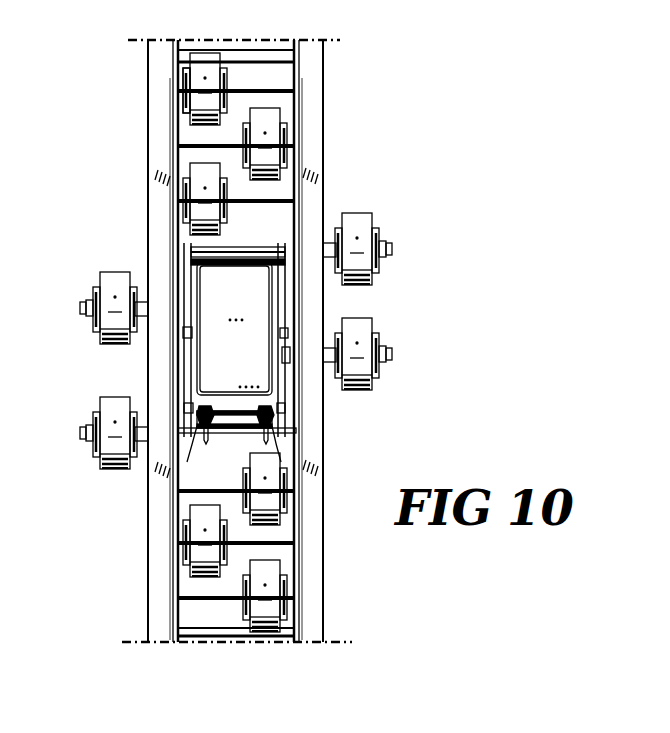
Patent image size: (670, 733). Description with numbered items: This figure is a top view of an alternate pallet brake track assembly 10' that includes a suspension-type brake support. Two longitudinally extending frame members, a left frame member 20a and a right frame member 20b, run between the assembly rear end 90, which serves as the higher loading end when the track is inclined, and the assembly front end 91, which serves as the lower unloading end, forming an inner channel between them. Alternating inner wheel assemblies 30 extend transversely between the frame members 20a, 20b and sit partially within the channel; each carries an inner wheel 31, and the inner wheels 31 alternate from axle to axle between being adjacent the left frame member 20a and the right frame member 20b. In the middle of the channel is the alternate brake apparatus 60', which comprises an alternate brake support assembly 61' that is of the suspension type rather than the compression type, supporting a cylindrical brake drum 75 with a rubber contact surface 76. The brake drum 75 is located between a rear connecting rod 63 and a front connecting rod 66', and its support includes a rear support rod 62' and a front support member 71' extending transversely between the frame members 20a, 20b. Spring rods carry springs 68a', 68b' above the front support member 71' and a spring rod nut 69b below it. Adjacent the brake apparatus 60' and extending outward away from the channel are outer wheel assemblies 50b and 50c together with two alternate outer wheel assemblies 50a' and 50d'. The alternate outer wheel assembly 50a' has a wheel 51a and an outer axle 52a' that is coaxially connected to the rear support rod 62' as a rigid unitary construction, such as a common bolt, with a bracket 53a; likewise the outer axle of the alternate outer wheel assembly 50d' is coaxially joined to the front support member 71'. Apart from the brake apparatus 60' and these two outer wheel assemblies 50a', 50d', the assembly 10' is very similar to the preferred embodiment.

The pallet brake track assembly 10' is at (182, 324).
The assembly rear end 90 is at (165, 27).
The assembly front end 91 is at (170, 646).
The spring rod nut 69b is at (422, 14).
The alternating inner wheel assembly 30 is at (224, 82).
The inner wheel 31 is at (185, 118).
The left frame member 20a is at (160, 140).
The right frame member 20b is at (313, 100).
The rear support rod 62' is at (276, 292).
The rear connecting rod 63 is at (262, 252).
The roller body 51a is at (362, 222).
The alternate outer wheel assembly 50a' is at (399, 250).
The outer axle 52a' is at (427, 244).
The roller bracket 53a is at (330, 262).
The outer wheel assembly 50c is at (383, 338).
The outer wheel assembly 50b is at (93, 294).
The alternate outer wheel assembly 50d' is at (96, 425).
The alternate brake apparatus 60' is at (238, 345).
The brake drum 75 is at (215, 348).
The rubber contact surface 76 is at (235, 372).
The alternate brake support assembly 61' is at (135, 377).
The left foot pin 68a' is at (156, 475).
The rail bracket 66' is at (345, 377).
The right foot pin 68b' is at (334, 434).
The front support member 71' is at (279, 447).